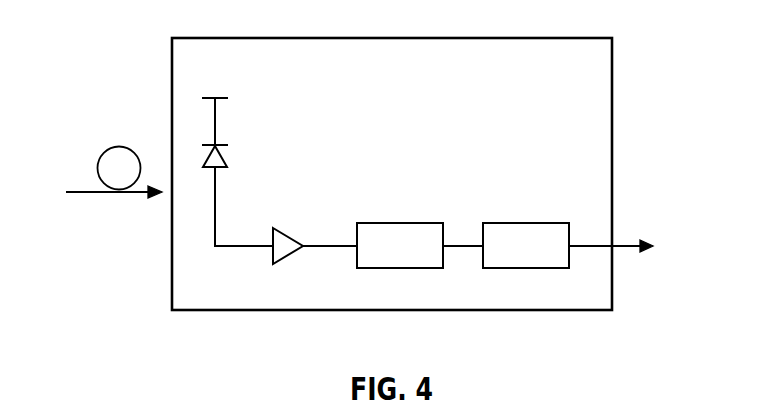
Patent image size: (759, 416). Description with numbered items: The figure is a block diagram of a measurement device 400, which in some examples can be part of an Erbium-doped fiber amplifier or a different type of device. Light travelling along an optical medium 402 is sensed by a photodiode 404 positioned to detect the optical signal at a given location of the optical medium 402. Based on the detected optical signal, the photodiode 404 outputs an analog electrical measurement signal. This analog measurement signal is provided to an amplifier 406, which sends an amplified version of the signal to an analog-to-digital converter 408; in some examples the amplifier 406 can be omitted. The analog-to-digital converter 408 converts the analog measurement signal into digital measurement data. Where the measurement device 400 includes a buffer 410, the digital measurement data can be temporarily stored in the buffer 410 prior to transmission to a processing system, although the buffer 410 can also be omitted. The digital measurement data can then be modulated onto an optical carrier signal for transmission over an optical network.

The measurement device 400 is at (246, 36).
The optical medium 402 is at (88, 193).
The photodiode 404 is at (212, 168).
The amplifier 406 is at (289, 232).
The analog-to-digital converter (ADC) 408 is at (398, 223).
The buffer 410 is at (525, 223).